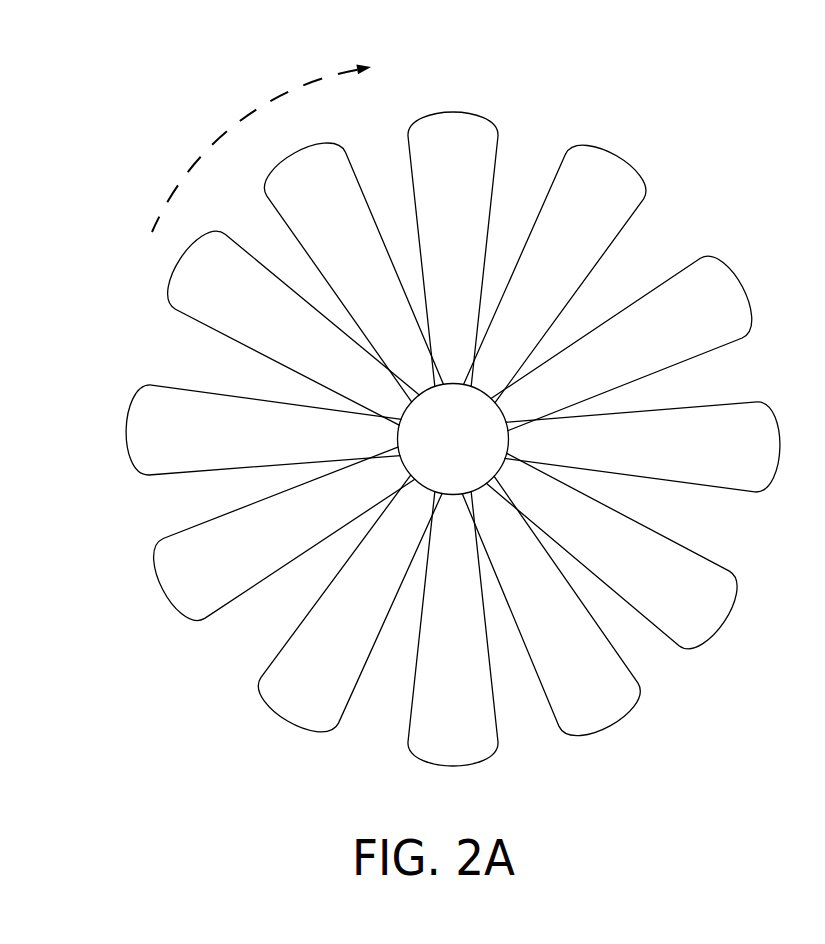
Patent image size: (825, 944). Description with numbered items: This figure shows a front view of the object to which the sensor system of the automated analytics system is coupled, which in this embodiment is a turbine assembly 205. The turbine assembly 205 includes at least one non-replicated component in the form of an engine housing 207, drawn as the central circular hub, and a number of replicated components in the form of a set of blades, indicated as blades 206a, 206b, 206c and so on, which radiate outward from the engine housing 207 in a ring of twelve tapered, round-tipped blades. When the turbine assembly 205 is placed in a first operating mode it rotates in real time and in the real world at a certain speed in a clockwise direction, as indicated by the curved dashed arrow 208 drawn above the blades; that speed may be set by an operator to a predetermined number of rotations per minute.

The turbine assembly 205 is at (490, 76).
The blade 206a is at (492, 197).
The blade 206b is at (382, 133).
The blade 206c is at (250, 208).
The engine housing 207 is at (472, 452).
The arrow 208 is at (289, 91).